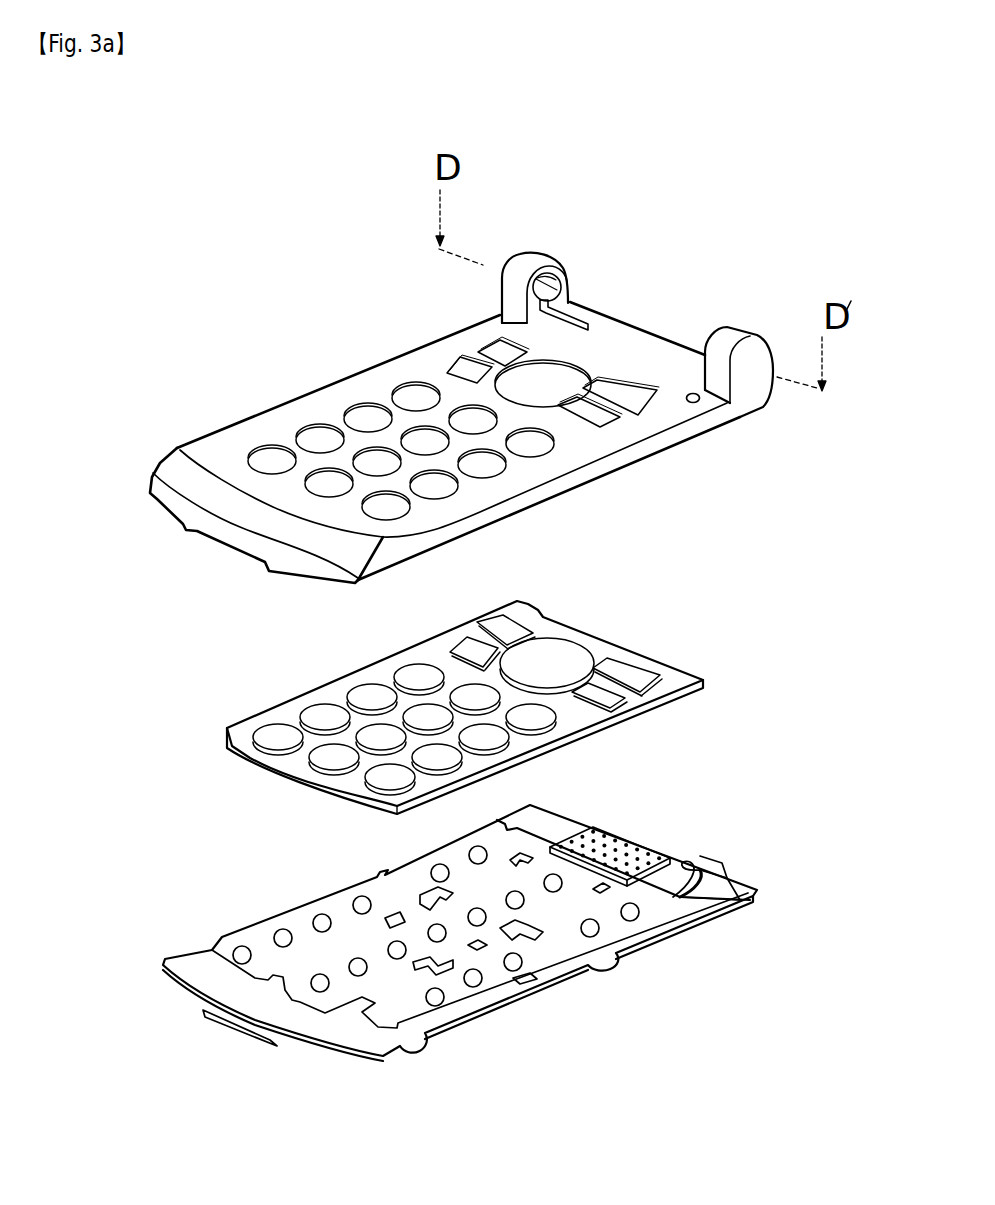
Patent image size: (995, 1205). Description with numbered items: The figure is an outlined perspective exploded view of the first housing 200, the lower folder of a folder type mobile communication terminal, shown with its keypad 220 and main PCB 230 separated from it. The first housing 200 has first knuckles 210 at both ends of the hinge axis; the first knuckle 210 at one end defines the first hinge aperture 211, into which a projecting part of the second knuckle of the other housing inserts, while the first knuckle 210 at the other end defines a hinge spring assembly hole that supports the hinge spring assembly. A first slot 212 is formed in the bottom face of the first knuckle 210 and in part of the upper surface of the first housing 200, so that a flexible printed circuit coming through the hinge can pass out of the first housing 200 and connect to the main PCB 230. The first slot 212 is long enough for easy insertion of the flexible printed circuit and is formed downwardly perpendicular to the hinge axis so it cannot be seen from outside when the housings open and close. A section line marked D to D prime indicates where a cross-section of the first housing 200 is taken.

The first housing 200 is at (343, 387).
The first knuckle 210 is at (523, 256).
The first hinge aperture 211 is at (558, 282).
The first slot 212 is at (577, 303).
The keypad 220 is at (607, 643).
The main PCB 230 is at (680, 865).